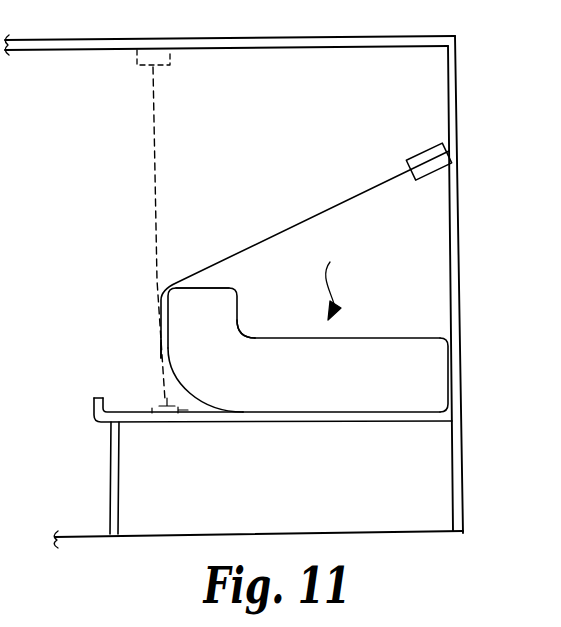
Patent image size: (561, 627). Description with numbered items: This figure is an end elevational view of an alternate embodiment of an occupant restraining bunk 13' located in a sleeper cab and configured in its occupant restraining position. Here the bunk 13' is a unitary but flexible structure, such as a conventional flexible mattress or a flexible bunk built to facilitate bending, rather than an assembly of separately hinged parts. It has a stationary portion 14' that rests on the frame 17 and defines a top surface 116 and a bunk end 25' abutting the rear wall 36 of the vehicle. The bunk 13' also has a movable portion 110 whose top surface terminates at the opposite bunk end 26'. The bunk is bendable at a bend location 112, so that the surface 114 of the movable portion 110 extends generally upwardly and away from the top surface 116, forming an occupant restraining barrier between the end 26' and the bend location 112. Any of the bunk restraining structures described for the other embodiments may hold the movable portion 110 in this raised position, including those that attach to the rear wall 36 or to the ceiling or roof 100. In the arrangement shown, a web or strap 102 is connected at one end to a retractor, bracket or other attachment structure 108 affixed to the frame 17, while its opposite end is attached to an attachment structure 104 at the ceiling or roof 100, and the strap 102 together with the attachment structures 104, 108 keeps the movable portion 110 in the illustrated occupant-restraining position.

The ceiling or roof 100 is at (270, 49).
The rear wall 36 is at (458, 193).
The attachment structure 104 is at (135, 63).
The web or strap 102 is at (155, 130).
The stationary portion 14' is at (342, 344).
The bend location 112 is at (256, 337).
The top surface 116 is at (386, 338).
The bunk end 25' is at (478, 367).
The bunk end 26' is at (228, 277).
The surface 114 is at (245, 333).
The movable portion 110 is at (161, 357).
The bunk 13' is at (340, 277).
The frame 17 is at (136, 425).
The attachment structure 108 is at (193, 412).